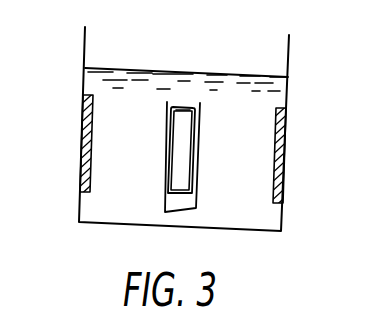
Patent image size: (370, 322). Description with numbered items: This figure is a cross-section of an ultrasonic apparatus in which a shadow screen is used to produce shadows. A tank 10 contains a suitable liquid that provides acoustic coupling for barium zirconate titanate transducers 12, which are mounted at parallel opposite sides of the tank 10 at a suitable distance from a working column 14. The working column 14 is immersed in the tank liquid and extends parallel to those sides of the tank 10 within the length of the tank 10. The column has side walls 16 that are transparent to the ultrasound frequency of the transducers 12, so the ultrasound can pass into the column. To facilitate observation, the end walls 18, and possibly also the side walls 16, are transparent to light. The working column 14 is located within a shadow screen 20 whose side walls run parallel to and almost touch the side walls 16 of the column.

The tank 10 is at (258, 233).
The barium zirconate titanate transducers 12 is at (80, 159).
The working column 14 is at (193, 111).
The side walls 16 is at (193, 135).
The end walls 18 is at (184, 106).
The shadow screen 20 is at (196, 208).